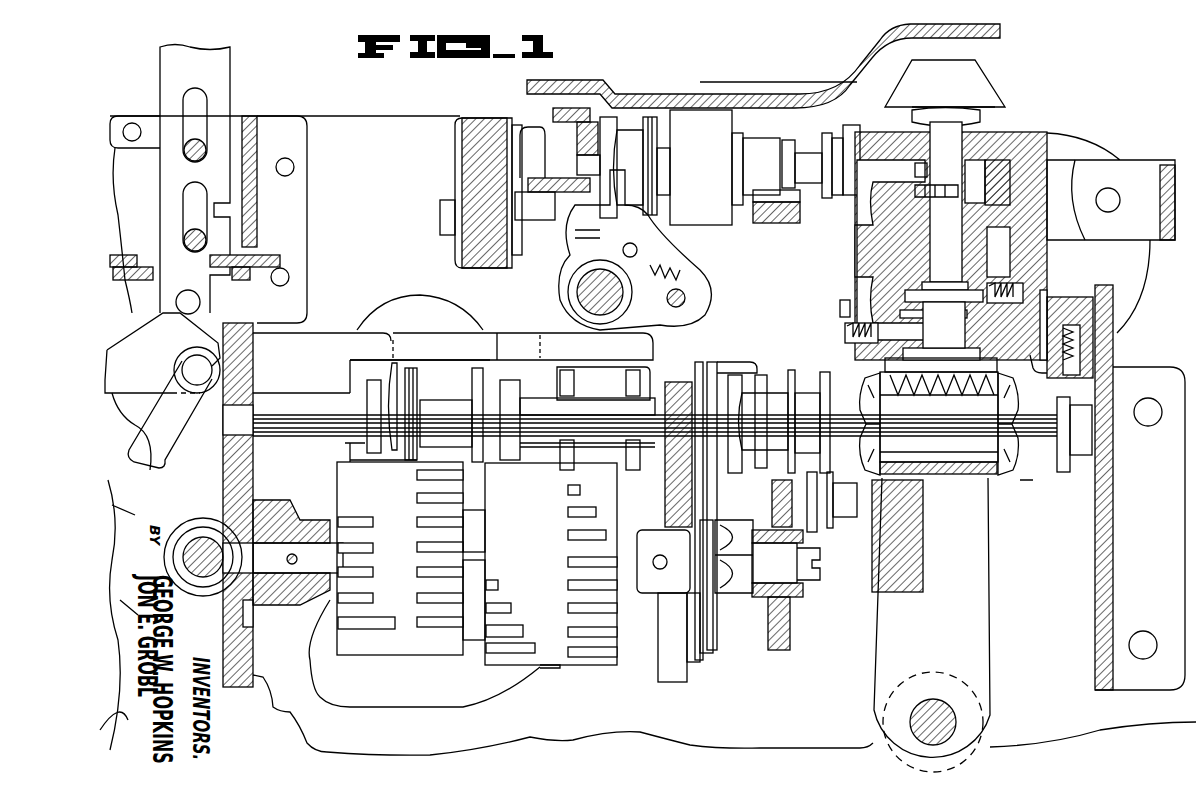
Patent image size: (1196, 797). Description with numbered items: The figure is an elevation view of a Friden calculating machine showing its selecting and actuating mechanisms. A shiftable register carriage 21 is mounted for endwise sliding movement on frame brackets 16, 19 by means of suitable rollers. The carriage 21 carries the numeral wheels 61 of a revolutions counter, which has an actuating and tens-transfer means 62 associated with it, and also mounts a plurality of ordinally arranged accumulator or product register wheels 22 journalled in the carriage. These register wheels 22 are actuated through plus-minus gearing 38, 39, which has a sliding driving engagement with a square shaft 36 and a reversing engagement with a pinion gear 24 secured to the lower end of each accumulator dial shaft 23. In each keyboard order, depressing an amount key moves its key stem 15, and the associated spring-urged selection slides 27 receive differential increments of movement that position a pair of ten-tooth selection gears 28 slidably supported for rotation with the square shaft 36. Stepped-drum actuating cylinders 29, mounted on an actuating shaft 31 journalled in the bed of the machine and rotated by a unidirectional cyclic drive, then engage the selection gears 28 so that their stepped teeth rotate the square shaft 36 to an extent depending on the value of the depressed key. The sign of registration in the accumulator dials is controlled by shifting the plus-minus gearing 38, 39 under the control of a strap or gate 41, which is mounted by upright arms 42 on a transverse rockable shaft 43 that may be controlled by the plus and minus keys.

The key stem 15 is at (226, 90).
The frame bracket 16 is at (1105, 543).
The frame bracket 19 is at (488, 120).
The register carriage 21 is at (895, 18).
The accumulator or product register wheels 22 is at (985, 75).
The accumulator dial shaft 23 is at (958, 243).
The pinion gear 24 is at (950, 385).
The selection slide 27 is at (530, 320).
The selection gear 28 is at (620, 352).
The actuating cylinder 29 is at (380, 503).
The actuating shaft 31 is at (320, 575).
The square shaft 36 is at (578, 412).
The plus-minus gearing 38 is at (883, 422).
The plus-minus gearing 39 is at (997, 437).
The strap or gate 41 is at (948, 478).
The upright arm 42 is at (975, 603).
The transverse rockable shaft 43 is at (933, 722).
The numeral wheel 61 is at (705, 110).
The actuating and tens-transfer means 62 is at (552, 274).